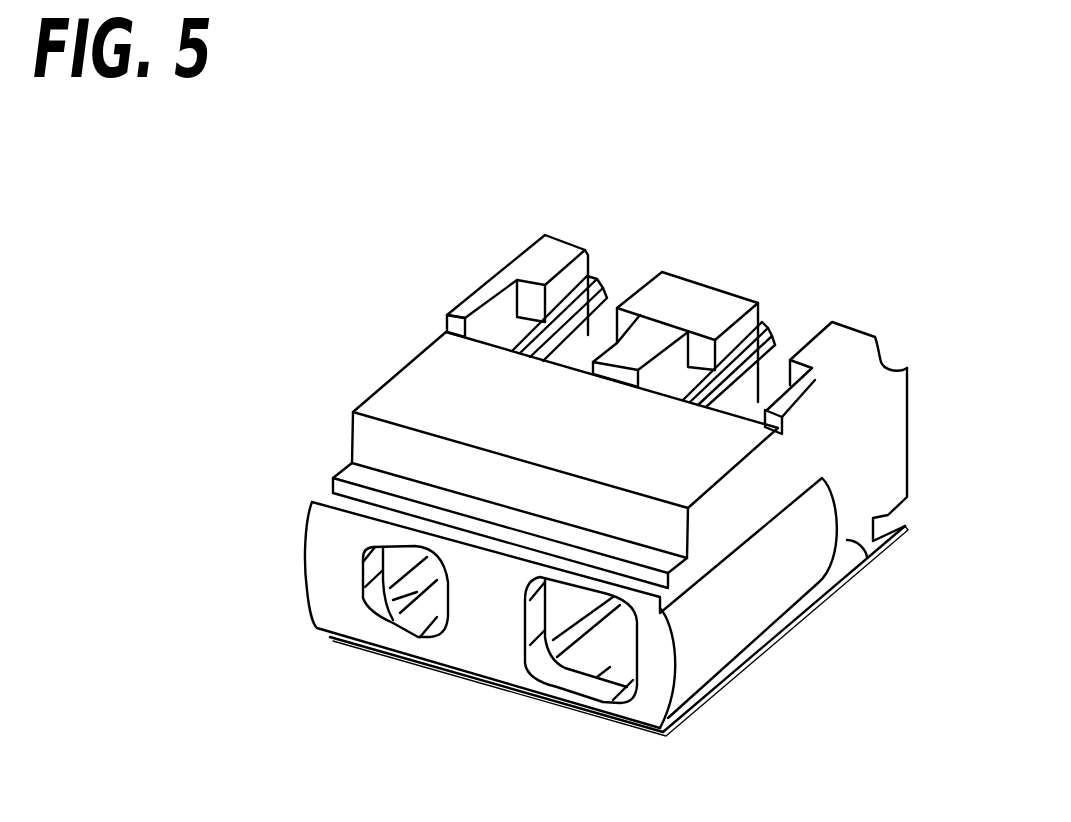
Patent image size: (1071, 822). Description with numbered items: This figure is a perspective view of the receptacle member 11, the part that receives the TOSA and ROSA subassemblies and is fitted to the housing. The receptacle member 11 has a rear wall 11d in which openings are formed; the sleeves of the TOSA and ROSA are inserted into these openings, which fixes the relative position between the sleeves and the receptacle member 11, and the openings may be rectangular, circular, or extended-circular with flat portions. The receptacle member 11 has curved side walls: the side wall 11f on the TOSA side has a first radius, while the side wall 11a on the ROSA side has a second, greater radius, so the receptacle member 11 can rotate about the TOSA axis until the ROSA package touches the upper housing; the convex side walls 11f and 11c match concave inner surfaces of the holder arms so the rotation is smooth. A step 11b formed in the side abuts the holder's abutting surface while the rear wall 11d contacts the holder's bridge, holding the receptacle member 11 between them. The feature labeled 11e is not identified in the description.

The receptacle member 11 is at (823, 227).
The side wall 11a is at (612, 292).
The step 11b is at (867, 560).
The side wall 11c is at (309, 553).
The rear wall 11d is at (610, 665).
The first insertion hole 11e is at (383, 620).
The side wall 11f is at (743, 623).